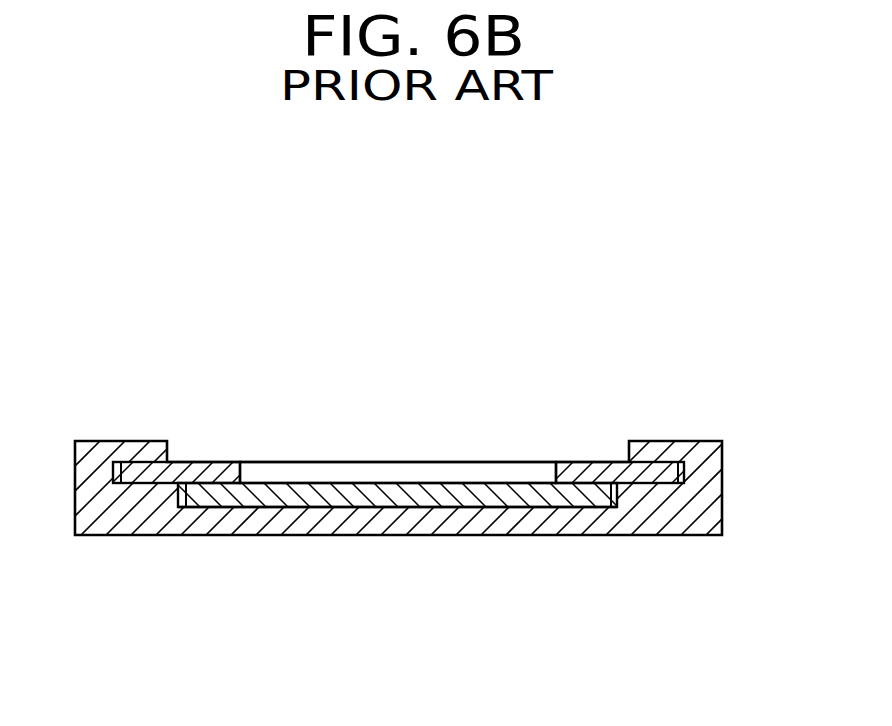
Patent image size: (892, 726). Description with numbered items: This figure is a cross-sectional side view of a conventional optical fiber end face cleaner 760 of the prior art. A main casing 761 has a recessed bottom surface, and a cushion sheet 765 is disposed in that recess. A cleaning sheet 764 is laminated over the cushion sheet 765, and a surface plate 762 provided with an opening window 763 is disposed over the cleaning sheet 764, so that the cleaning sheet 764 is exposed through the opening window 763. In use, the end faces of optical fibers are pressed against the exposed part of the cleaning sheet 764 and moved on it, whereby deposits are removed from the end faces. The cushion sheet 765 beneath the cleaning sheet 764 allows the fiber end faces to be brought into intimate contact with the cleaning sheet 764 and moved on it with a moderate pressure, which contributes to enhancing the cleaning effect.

The optical fiber end face cleaner 760 is at (348, 286).
The main casing 761 is at (150, 535).
The surface plate 762 is at (587, 462).
The opening window 763 is at (346, 462).
The cleaning sheet 764 is at (458, 470).
The cushion sheet 765 is at (397, 497).